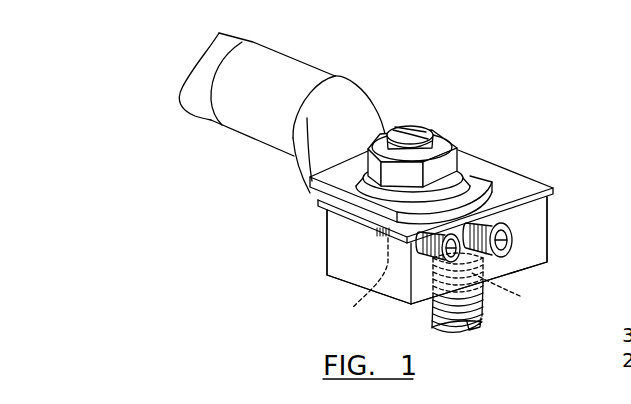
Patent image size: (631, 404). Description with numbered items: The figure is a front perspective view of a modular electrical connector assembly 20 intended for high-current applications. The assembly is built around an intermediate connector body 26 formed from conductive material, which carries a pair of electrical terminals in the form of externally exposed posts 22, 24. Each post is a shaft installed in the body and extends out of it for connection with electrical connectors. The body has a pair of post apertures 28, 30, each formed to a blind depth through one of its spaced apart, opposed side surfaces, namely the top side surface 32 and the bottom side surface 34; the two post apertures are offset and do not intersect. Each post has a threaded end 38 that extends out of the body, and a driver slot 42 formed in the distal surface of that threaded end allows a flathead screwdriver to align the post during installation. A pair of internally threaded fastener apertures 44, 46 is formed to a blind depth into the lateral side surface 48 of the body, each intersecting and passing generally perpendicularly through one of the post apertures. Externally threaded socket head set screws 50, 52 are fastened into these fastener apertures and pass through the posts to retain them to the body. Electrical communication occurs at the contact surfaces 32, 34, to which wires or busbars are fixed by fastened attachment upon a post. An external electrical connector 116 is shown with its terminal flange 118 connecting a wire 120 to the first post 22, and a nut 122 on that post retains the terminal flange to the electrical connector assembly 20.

The electrical connector assembly 20 is at (449, 99).
The first electrical terminal post 22 is at (432, 126).
The second electrical terminal post 24 is at (486, 308).
The connector body 26 is at (548, 237).
The first post aperture 28 is at (362, 285).
The second post aperture 30 is at (506, 291).
The top side surface 32 is at (492, 170).
The bottom side surface 34 is at (328, 277).
The threaded end 38 is at (419, 125).
The driver slot 42 is at (408, 126).
The first fastener aperture 44 is at (448, 257).
The second fastener aperture 46 is at (508, 243).
The lateral side surface 48 is at (525, 222).
The first socket head set screw 50 is at (434, 312).
The second socket head set screw 52 is at (500, 256).
The external electrical connector 116 is at (291, 77).
The terminal flange 118 is at (318, 193).
The wire 120 is at (240, 108).
The nut 122 is at (311, 175).